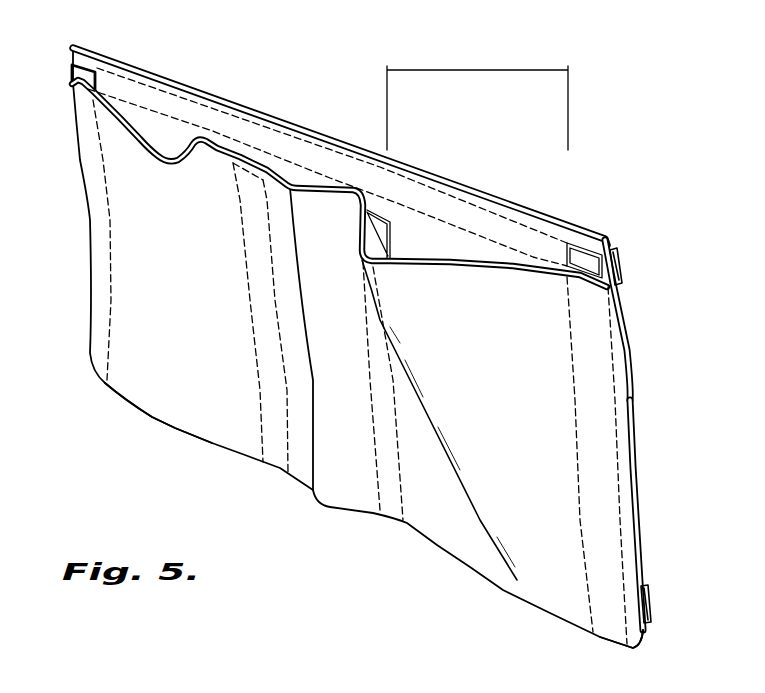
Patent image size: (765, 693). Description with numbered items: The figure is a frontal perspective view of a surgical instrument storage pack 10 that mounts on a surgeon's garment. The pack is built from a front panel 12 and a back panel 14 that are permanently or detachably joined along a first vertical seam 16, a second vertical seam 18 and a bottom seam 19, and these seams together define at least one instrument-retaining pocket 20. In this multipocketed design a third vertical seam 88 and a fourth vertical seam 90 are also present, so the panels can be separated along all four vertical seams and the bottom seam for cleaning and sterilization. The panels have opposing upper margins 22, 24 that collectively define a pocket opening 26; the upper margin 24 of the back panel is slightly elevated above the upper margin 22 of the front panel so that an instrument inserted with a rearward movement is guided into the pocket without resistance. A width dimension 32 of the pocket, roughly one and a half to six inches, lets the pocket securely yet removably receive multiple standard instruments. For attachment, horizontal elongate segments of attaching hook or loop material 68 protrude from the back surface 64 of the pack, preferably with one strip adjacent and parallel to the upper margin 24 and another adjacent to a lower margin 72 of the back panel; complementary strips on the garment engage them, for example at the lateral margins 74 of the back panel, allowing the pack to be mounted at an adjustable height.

The instrument storage pack 10 is at (90, 448).
The front panel 12 is at (503, 393).
The back panel 14 is at (462, 214).
The first vertical seam 16 is at (85, 168).
The second vertical seam 18 is at (260, 295).
The bottom seam 19 is at (173, 428).
The instrument-retaining pocket 20 is at (143, 123).
The upper margin of front panel 22 is at (427, 263).
The upper margin of back panel 24 is at (520, 210).
The pocket opening 26 is at (168, 142).
The width dimension of the pocket 32 is at (480, 70).
The back surface 64 is at (620, 307).
The attaching hook or loop material 68 is at (620, 263).
The lower margin of back panel 72 is at (647, 638).
The lateral margins of back panel 74 is at (634, 437).
The third vertical seam 88 is at (387, 488).
The fourth vertical seam 90 is at (603, 387).